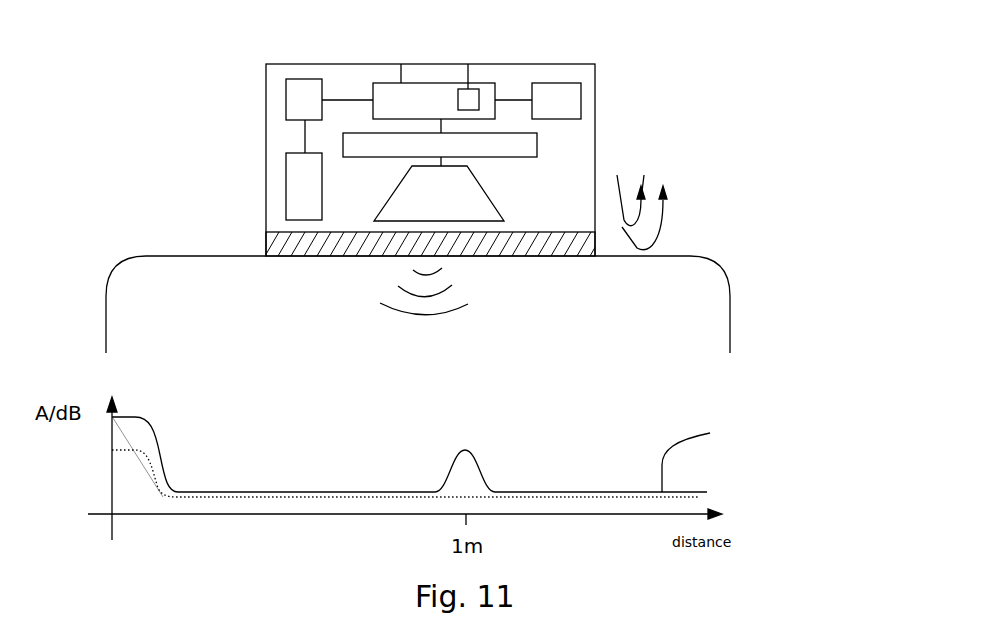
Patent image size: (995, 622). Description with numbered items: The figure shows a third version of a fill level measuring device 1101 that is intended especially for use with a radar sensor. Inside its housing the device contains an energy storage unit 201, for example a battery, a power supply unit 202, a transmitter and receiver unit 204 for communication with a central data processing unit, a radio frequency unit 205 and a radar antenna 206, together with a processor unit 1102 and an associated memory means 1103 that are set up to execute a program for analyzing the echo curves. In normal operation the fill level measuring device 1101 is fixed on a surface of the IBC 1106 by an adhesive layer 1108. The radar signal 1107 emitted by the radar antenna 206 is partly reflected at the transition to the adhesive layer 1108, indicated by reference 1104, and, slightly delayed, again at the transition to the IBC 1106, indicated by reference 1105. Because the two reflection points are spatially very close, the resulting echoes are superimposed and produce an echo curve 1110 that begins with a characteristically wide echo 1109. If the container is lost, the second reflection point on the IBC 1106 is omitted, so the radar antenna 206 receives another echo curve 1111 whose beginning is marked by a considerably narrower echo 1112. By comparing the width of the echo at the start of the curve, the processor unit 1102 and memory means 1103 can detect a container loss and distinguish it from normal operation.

The fill level measuring device 1101 is at (596, 100).
The processor unit 1102 is at (401, 64).
The memory means 1103 is at (468, 64).
The transmitter and receiver unit 204 is at (582, 89).
The power supply unit 202 is at (286, 96).
The energy storage unit 201 is at (286, 165).
The radio frequency unit 205 is at (539, 147).
The radar antenna 206 is at (488, 197).
The adhesive layer 1108 is at (266, 242).
The reflection at adhesive layer transition 1104 is at (644, 175).
The reflection at IBC transition 1105 is at (665, 185).
The IBC 1106 is at (732, 300).
The radar signal 1107 is at (410, 318).
The wide echo 1109 is at (155, 440).
The echo curve 1110 is at (478, 452).
The echo curve 1111 is at (716, 457).
The narrow echo 1112 is at (112, 449).